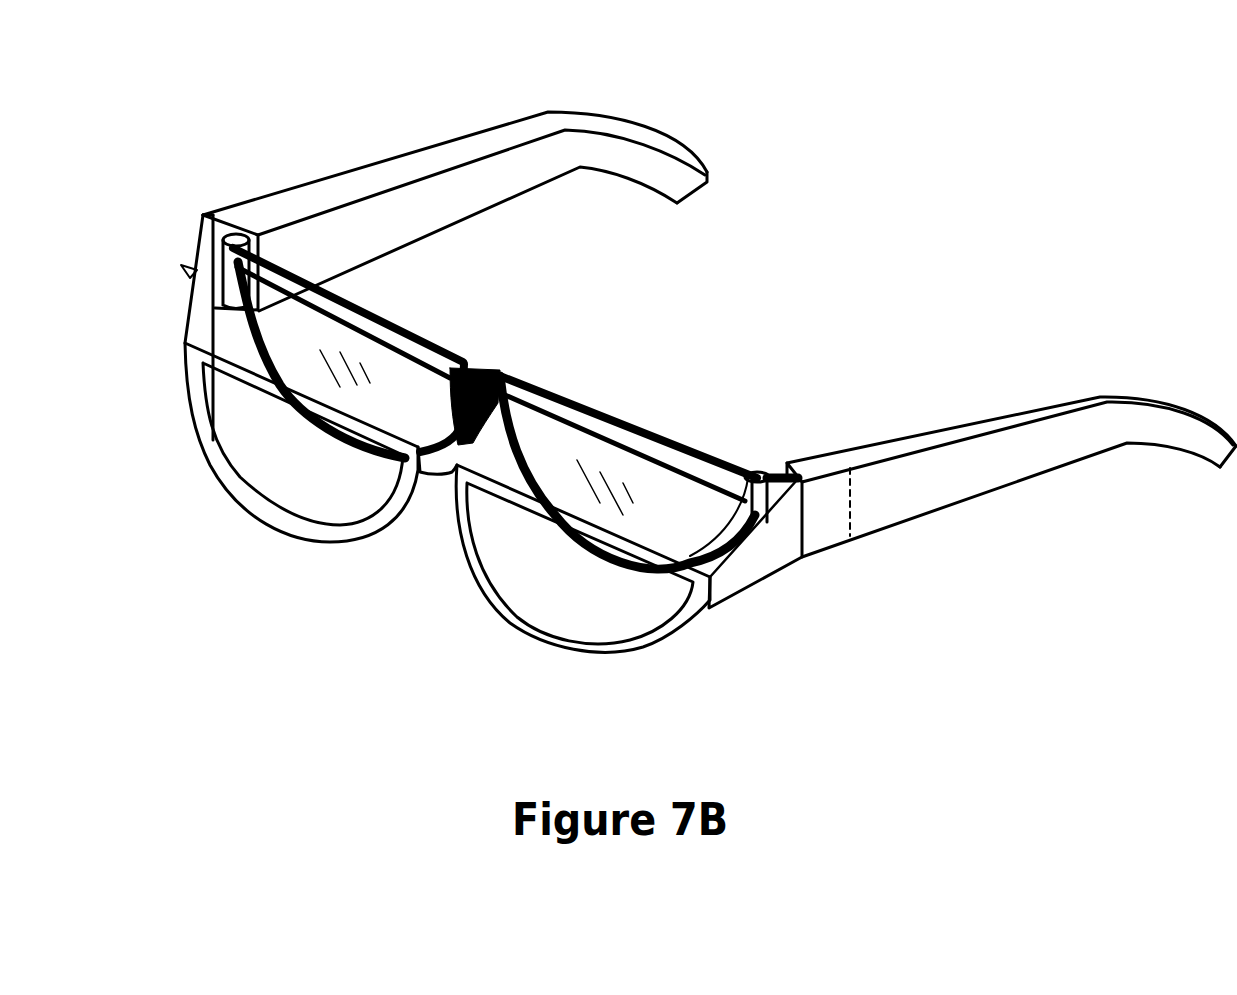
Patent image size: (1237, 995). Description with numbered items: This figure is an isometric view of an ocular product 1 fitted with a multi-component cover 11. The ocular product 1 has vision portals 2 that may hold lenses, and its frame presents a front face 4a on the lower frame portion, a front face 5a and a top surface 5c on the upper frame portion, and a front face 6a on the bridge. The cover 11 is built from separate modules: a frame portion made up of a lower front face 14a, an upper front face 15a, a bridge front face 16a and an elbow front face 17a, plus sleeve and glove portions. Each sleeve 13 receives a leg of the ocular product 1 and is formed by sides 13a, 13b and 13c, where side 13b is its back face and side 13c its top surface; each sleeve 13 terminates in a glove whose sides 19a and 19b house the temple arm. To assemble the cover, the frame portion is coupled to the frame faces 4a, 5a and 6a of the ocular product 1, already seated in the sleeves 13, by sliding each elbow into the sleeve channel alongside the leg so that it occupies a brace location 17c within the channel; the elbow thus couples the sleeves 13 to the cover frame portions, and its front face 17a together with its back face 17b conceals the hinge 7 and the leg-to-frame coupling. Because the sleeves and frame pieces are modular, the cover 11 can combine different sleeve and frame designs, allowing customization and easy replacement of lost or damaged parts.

The ocular product 1 is at (568, 380).
The vision portals 2 is at (495, 405).
The front face of lower frame portion 4a is at (582, 556).
The front face of upper frame portion 5a is at (335, 314).
The top surface of upper frame portion 5c is at (419, 338).
The front face of bridge 6a is at (478, 390).
The hinge 7 is at (237, 232).
The cover 11 is at (355, 545).
The sleeve 13 is at (543, 108).
The side of sleeve 13a is at (1017, 479).
The back face of sleeve 13b is at (481, 220).
The top surface of sleeve 13c is at (903, 446).
The front face of lower cover portion 14a is at (240, 502).
The front face of upper cover portion 15a is at (198, 359).
The front face of bridge cover portion 16a is at (433, 491).
The elbow front face 17a is at (755, 535).
The back face of elbow 17b is at (204, 302).
The brace location 17c is at (828, 502).
The side of glove 19a is at (1195, 440).
The side of glove 19b is at (662, 167).